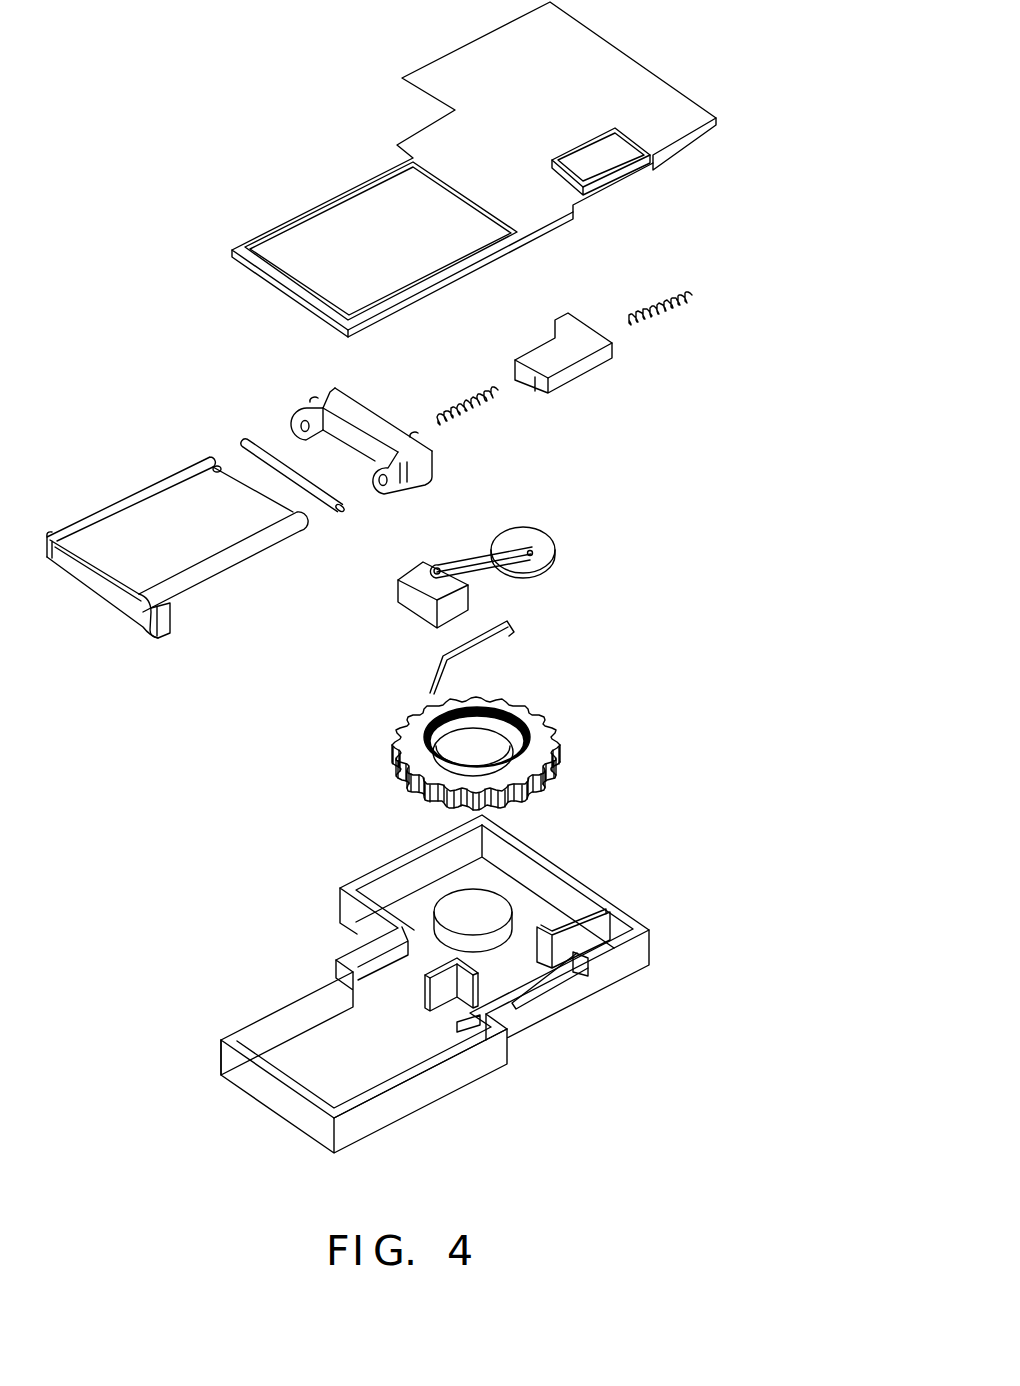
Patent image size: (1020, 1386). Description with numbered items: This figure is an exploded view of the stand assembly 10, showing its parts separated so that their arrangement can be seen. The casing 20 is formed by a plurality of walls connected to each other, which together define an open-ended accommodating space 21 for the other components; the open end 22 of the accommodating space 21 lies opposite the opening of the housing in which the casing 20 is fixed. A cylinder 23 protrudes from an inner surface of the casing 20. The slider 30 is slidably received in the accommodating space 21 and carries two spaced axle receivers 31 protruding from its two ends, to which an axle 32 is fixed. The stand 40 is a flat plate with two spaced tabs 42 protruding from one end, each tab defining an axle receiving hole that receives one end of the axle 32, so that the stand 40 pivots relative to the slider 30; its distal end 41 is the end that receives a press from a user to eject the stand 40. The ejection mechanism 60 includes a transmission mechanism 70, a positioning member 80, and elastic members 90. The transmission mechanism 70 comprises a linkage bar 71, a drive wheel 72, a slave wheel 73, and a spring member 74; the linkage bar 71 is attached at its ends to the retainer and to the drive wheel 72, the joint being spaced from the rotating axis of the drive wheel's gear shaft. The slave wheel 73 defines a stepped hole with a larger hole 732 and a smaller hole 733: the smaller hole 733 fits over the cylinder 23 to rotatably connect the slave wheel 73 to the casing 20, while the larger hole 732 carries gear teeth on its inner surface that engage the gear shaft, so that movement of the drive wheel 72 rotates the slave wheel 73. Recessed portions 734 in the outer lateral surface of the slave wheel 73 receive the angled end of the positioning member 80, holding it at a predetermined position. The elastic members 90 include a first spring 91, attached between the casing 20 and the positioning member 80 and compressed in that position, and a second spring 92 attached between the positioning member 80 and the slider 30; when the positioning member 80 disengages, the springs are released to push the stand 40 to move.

The stand assembly 10 is at (191, 133).
The casing 20 is at (401, 970).
The accommodating space 21 is at (423, 1050).
The open end 22 is at (267, 1107).
The cylinder 23 is at (453, 908).
The slider 30 is at (308, 413).
The axle receivers 31 is at (303, 417).
The axle 32 is at (247, 447).
The stand 40 is at (158, 496).
The distal end 41 is at (77, 563).
The tabs 42 is at (173, 502).
The ejection mechanism 60 is at (783, 193).
The transmission mechanism 70 is at (490, 685).
The linkage bar 71 is at (480, 567).
The drive wheel 72 is at (540, 535).
The slave wheel 73 is at (447, 738).
The larger hole 732 is at (432, 720).
The smaller hole 733 is at (430, 745).
The recessed portions 734 is at (530, 783).
The spring member 74 is at (493, 635).
The positioning member 80 is at (587, 343).
The elastic members 90 is at (608, 299).
The first spring 91 is at (680, 271).
The second spring 92 is at (482, 392).